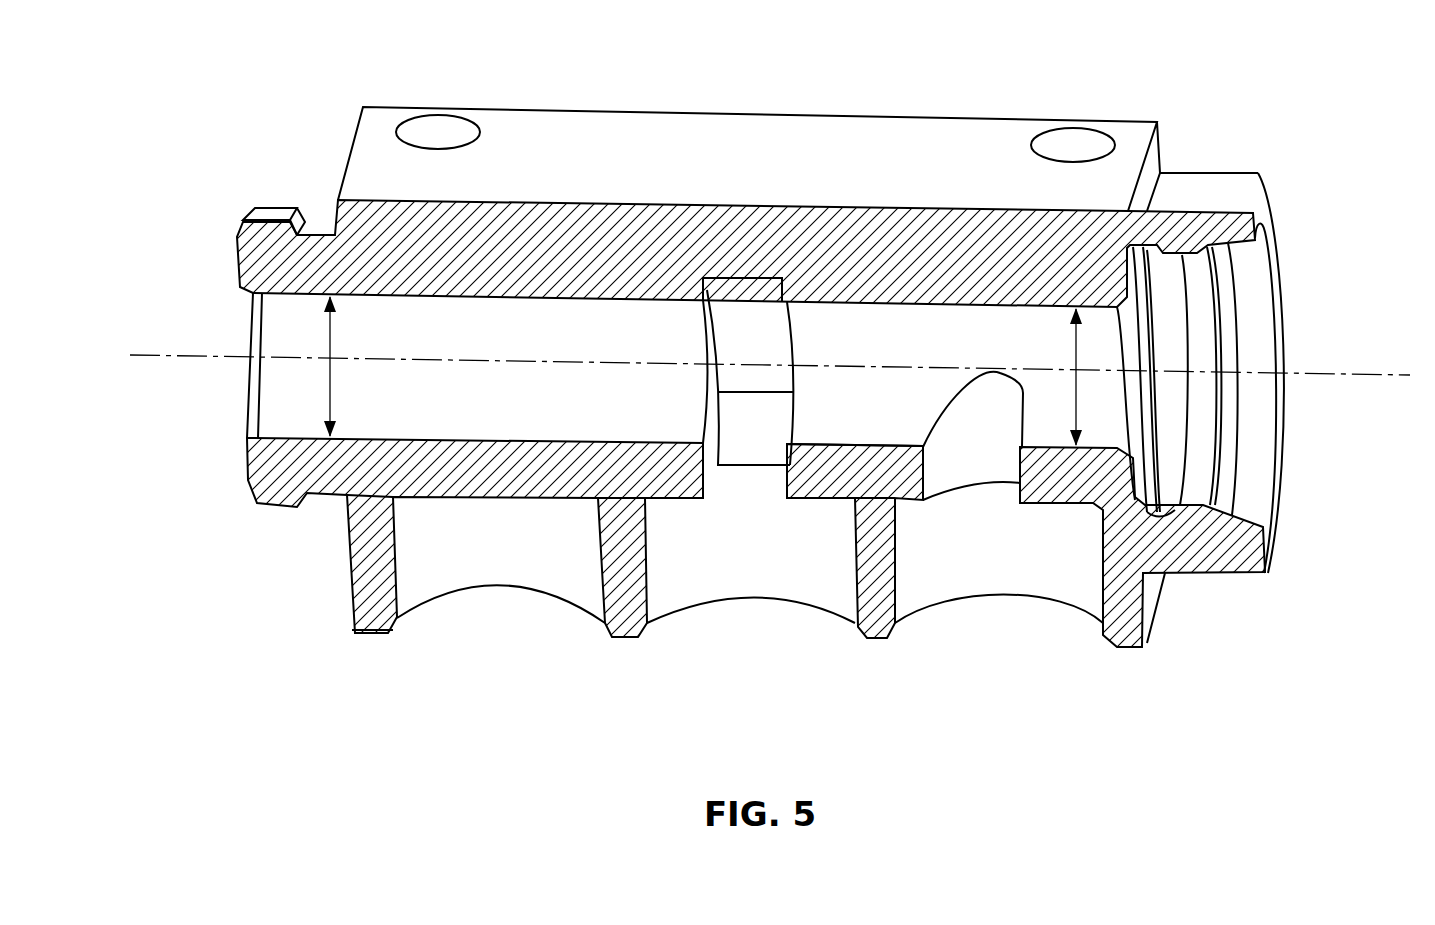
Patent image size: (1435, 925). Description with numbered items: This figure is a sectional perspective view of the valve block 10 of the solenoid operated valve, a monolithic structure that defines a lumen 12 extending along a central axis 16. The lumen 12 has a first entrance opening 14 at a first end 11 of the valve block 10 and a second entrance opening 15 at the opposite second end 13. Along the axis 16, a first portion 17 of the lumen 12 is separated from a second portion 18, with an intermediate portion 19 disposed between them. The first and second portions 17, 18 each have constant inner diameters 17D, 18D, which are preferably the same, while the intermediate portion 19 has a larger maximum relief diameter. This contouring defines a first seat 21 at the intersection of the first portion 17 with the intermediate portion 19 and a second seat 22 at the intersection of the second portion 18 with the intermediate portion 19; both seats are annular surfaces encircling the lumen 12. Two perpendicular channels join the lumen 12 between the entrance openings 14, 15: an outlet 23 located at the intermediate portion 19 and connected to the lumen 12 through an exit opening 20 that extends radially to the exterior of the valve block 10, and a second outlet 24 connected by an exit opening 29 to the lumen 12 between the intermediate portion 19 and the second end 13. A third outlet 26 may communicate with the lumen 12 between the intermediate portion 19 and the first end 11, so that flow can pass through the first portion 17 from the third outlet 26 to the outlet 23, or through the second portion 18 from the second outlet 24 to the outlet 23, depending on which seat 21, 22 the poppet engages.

The valve block 10 is at (1137, 703).
The first end 11 is at (267, 207).
The lumen 12 is at (245, 423).
The second end 13 is at (1258, 173).
The first entrance opening 14 is at (247, 328).
The second entrance opening 15 is at (1288, 333).
The central axis 16 is at (1348, 378).
The first portion 17 is at (445, 403).
The inner diameter 17D is at (323, 385).
The second portion 18 is at (892, 413).
The inner diameter 18D is at (1078, 395).
The intermediate portion 19 is at (745, 310).
The exit opening 20 is at (718, 465).
The first seat 21 is at (703, 280).
The second seat 22 is at (795, 330).
The outlet 23 is at (793, 608).
The second outlet 24 is at (1072, 618).
The third outlet 26 is at (527, 603).
The exit opening 29 is at (940, 493).